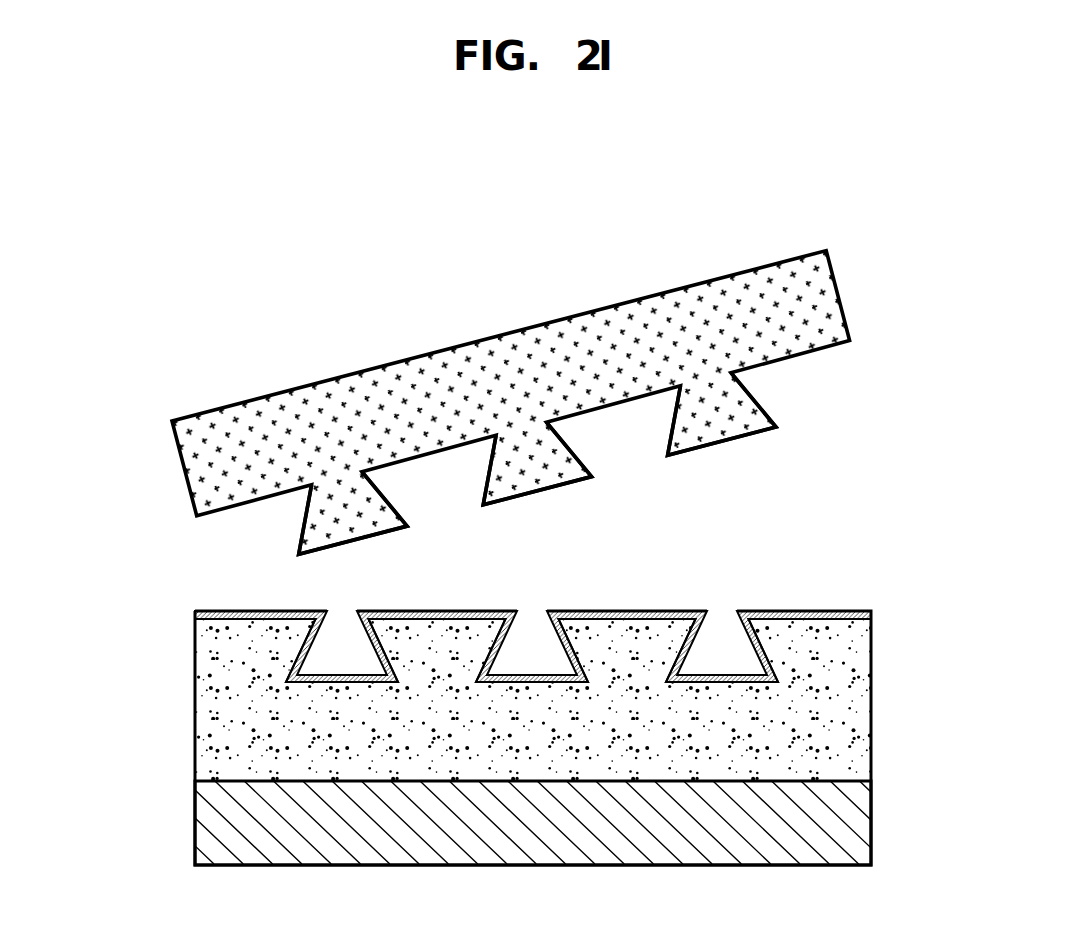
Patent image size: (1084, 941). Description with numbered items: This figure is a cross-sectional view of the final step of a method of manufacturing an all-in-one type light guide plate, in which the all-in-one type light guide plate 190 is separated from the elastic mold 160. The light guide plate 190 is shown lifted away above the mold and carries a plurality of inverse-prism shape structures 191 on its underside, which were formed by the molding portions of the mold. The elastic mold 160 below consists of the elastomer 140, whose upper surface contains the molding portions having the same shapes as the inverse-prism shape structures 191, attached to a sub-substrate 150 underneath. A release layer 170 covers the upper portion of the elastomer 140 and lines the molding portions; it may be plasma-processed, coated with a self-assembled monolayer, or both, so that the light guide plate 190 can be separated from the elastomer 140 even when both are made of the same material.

The all-in-one type light guide plate 190 is at (165, 486).
The inverse-prism shape structures 191 is at (377, 535).
The elastic mold 160 is at (501, 732).
The elastomer 140 is at (857, 707).
The sub-substrate 150 is at (853, 827).
The release layer 170 is at (872, 613).